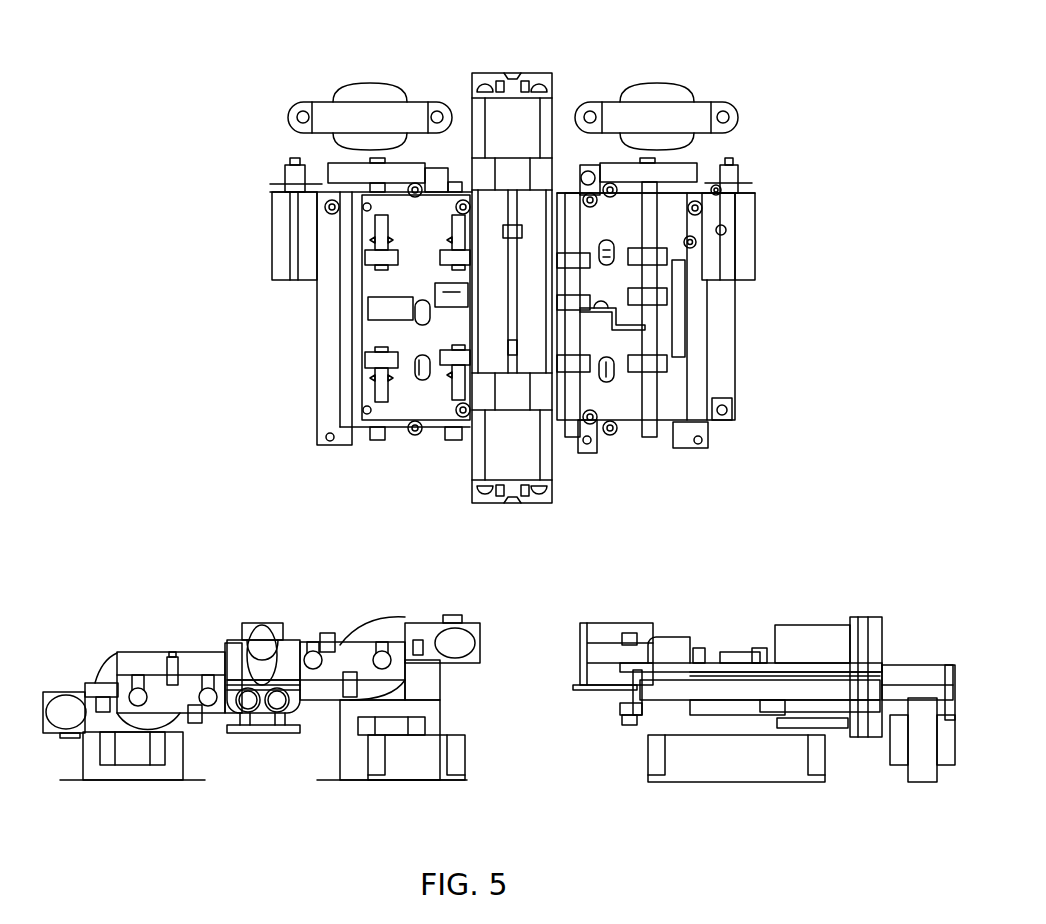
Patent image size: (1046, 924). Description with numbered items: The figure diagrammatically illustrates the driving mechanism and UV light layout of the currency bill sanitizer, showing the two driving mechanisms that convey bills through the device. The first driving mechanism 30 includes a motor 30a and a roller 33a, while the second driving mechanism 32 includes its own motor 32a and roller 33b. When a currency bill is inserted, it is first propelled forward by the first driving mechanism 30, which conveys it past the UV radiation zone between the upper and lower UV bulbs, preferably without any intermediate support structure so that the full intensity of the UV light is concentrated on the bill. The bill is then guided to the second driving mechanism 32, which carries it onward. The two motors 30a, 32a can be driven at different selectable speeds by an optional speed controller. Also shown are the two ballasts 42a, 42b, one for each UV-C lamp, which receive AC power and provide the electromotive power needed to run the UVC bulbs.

The first driving mechanism 30 is at (733, 347).
The motor 30a is at (755, 236).
The second driving mechanism 32 is at (327, 335).
The motor 32a is at (270, 237).
The roller 33a is at (667, 362).
The roller 33b is at (370, 365).
The ballast 42a is at (658, 98).
The ballast 42b is at (368, 98).